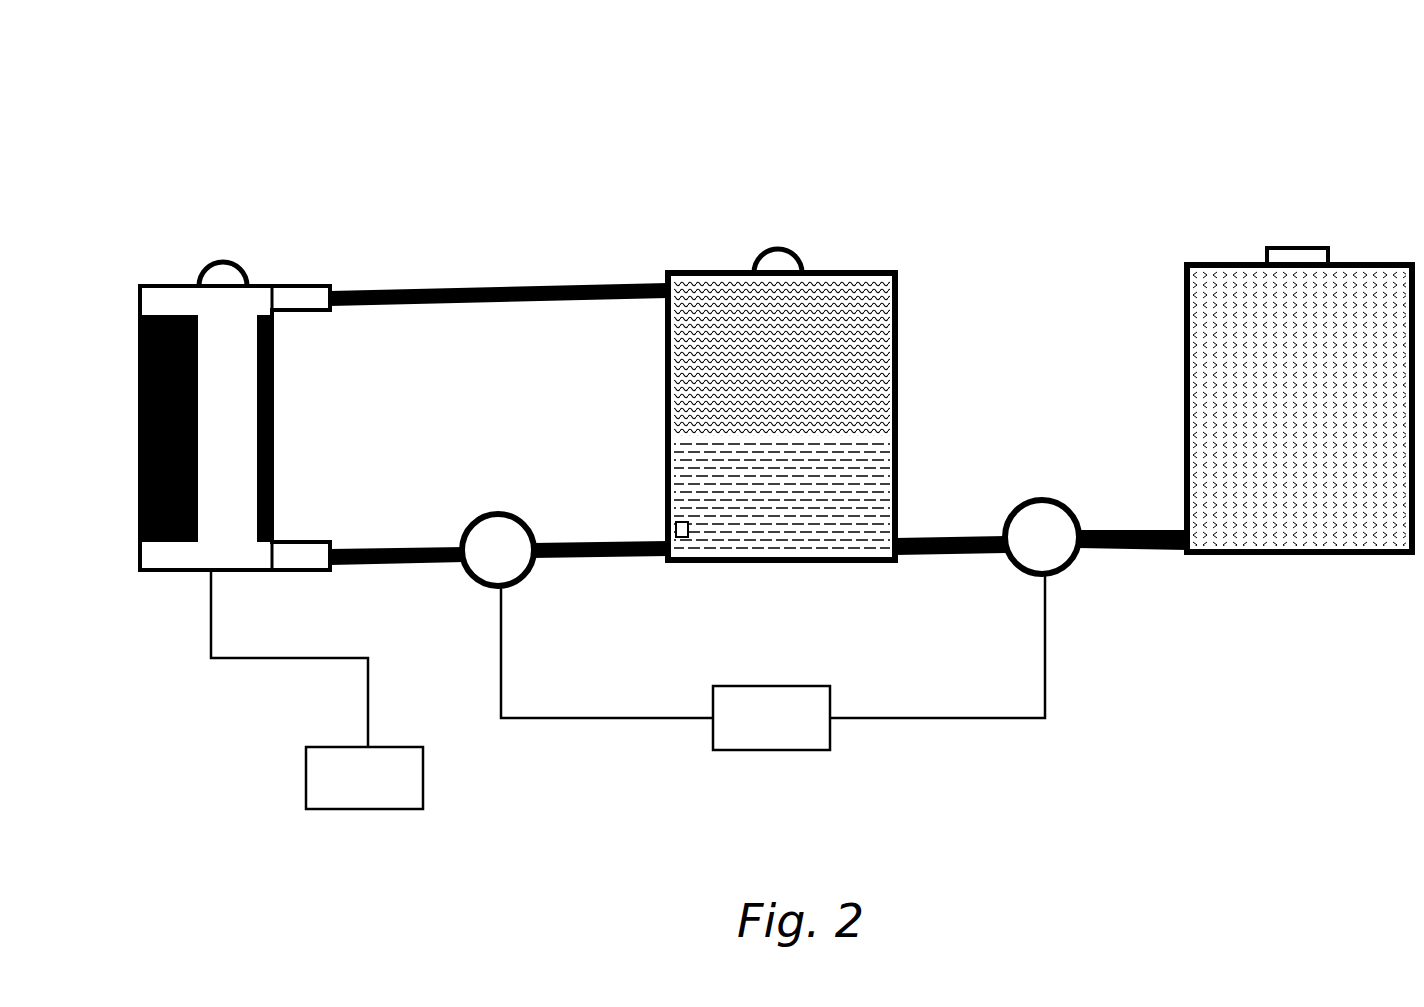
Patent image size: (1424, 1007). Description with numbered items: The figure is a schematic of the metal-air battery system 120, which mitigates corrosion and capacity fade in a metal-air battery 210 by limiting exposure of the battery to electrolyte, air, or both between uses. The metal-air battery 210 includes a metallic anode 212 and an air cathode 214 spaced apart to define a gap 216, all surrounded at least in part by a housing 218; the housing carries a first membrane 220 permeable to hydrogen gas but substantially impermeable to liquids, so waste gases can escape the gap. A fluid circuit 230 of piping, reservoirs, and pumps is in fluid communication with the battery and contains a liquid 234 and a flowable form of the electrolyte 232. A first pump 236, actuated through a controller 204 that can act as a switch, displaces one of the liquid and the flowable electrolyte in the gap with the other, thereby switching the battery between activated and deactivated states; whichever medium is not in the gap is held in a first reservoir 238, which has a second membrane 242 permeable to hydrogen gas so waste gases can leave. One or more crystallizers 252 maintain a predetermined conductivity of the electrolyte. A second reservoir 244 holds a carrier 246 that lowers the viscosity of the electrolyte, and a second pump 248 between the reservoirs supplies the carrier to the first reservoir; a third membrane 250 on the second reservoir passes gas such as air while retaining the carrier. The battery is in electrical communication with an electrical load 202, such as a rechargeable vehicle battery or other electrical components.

The metal-air battery system 120 is at (266, 98).
The electrical load 202 is at (386, 790).
The controller 204 is at (792, 730).
The metal-air battery 210 is at (168, 592).
The metallic anode 212 is at (140, 393).
The air cathode 214 is at (273, 407).
The gap 216 is at (248, 427).
The housing 218 is at (165, 283).
The first membrane 220 is at (232, 262).
The fluid circuit 230 is at (648, 225).
The flowable form of the electrolyte 232 is at (818, 500).
The liquid 234 is at (852, 342).
The first pump 236 is at (502, 513).
The first reservoir 238 is at (866, 270).
The second membrane 242 is at (780, 250).
The second reservoir 244 is at (1198, 263).
The carrier 246 is at (1250, 513).
The second pump 248 is at (1040, 501).
The third membrane 250 is at (1318, 248).
The crystallizer 252 is at (683, 536).